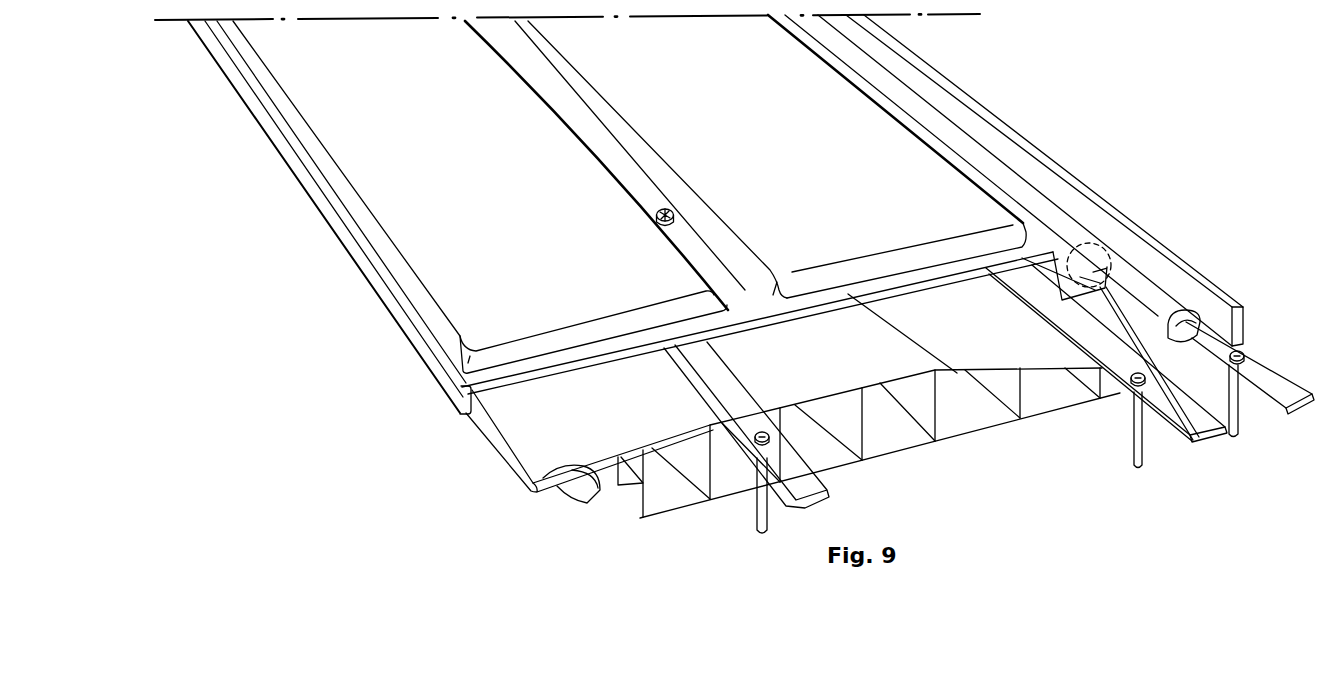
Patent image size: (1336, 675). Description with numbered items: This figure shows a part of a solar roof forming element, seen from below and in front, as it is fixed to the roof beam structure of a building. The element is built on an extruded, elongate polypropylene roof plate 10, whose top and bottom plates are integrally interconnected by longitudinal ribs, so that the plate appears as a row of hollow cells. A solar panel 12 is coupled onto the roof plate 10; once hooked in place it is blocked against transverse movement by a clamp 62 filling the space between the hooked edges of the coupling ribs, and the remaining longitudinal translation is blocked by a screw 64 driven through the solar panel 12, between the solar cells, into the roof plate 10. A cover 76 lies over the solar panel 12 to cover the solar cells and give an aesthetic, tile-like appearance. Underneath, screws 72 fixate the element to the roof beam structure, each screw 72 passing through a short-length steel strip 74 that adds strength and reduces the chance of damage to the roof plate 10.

The roof plate 10 is at (637, 520).
The solar panel 12 is at (884, 300).
The clamp 62 is at (1182, 433).
The screw 64 is at (672, 207).
The screws 72 is at (757, 522).
The steel strips 74 is at (822, 491).
The cover 76 is at (477, 179).